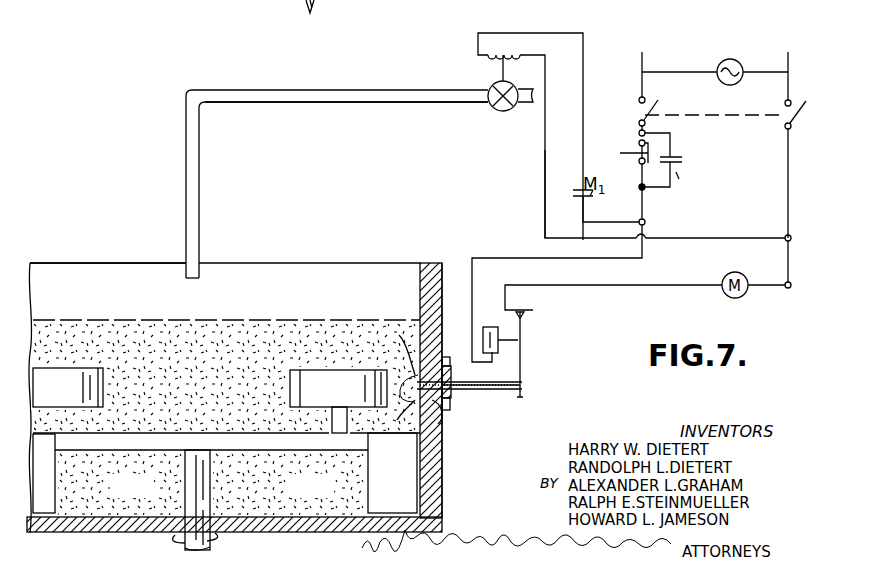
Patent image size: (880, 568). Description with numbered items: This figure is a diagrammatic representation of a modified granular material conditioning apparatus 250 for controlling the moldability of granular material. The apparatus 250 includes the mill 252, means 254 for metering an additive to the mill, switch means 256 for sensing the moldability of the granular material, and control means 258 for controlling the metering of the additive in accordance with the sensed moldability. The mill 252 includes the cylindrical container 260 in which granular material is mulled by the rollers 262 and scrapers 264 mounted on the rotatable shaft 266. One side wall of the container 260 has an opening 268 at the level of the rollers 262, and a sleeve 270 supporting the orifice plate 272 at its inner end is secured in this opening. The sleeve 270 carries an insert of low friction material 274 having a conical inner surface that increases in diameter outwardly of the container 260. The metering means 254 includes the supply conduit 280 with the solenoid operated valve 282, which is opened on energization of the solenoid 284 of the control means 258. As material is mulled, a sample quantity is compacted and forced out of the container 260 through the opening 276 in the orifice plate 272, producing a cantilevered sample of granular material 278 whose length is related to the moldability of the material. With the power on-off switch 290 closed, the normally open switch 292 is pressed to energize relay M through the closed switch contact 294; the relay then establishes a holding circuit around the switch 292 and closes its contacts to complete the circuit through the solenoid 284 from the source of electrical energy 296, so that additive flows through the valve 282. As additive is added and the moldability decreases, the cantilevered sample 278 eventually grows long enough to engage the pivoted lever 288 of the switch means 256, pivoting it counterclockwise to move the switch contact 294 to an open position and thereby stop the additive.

The granular material conditioning apparatus 250 is at (308, 188).
The mill 252 is at (242, 262).
The means for metering an additive 254 is at (460, 104).
The switch means 256 is at (526, 322).
The control means 258 is at (542, 203).
The cylindrical container 260 is at (442, 460).
The rollers 262 is at (103, 386).
The scrapers 264 is at (368, 486).
The rotatable shaft 266 is at (184, 483).
The opening 268 is at (443, 424).
The sleeve 270 is at (445, 408).
The orifice plate 272 is at (414, 385).
The insert of low friction material 274 is at (450, 391).
The opening in the orifice plate 276 is at (415, 392).
The cantilevered sample of granular material 278 is at (512, 383).
The supply conduit 280 is at (275, 90).
The solenoid operated valve 282 is at (502, 112).
The solenoid 284 is at (525, 49).
The pivoted lever 288 is at (522, 362).
The power on-off switch 290 is at (655, 113).
The switch 292 is at (668, 145).
The switch contact 294 is at (505, 339).
The source of electrical energy 296 is at (728, 58).